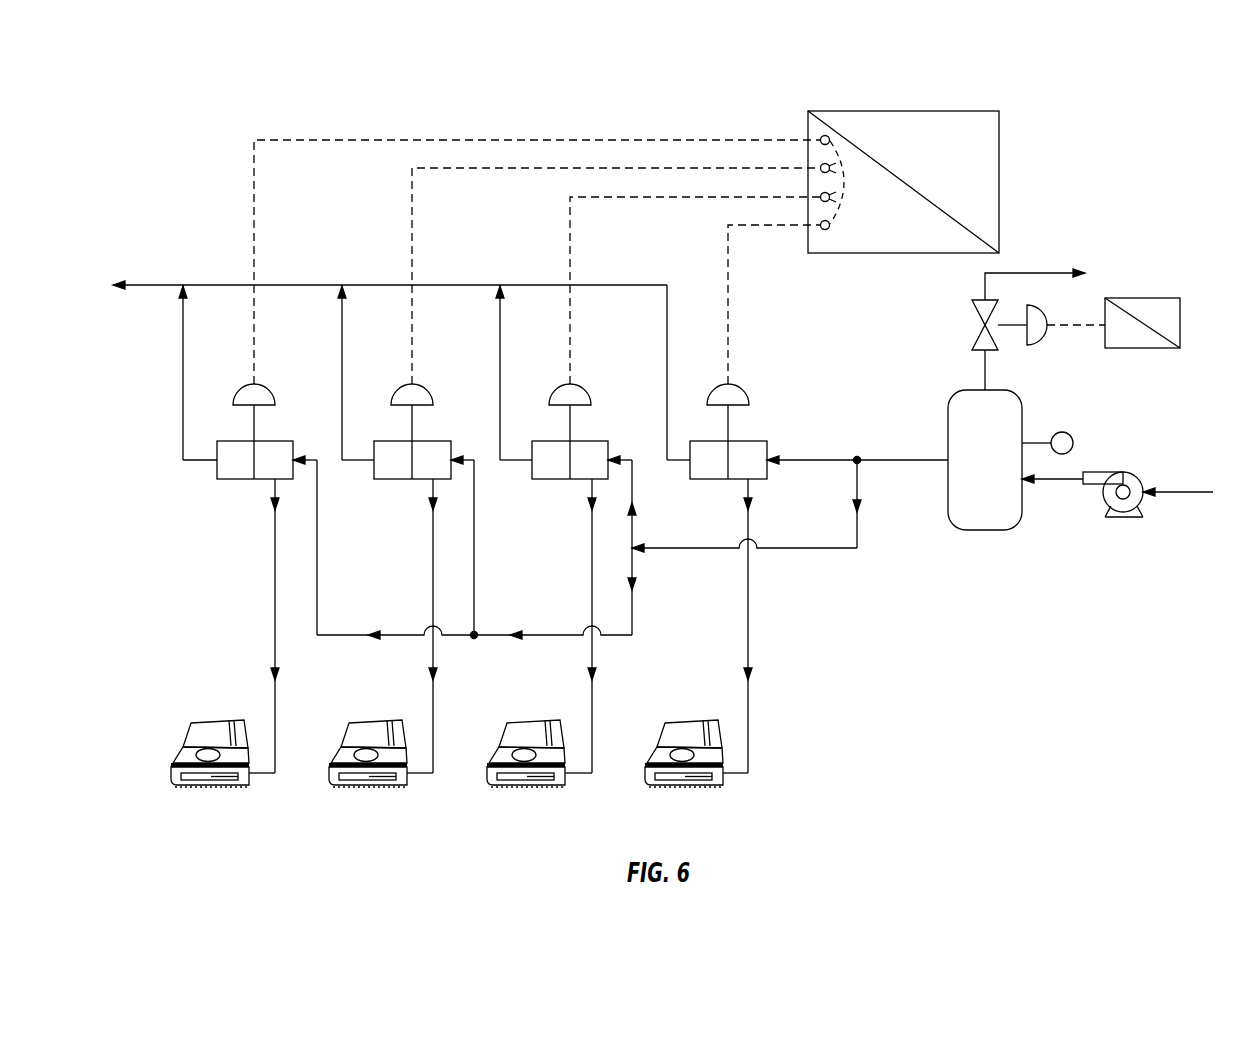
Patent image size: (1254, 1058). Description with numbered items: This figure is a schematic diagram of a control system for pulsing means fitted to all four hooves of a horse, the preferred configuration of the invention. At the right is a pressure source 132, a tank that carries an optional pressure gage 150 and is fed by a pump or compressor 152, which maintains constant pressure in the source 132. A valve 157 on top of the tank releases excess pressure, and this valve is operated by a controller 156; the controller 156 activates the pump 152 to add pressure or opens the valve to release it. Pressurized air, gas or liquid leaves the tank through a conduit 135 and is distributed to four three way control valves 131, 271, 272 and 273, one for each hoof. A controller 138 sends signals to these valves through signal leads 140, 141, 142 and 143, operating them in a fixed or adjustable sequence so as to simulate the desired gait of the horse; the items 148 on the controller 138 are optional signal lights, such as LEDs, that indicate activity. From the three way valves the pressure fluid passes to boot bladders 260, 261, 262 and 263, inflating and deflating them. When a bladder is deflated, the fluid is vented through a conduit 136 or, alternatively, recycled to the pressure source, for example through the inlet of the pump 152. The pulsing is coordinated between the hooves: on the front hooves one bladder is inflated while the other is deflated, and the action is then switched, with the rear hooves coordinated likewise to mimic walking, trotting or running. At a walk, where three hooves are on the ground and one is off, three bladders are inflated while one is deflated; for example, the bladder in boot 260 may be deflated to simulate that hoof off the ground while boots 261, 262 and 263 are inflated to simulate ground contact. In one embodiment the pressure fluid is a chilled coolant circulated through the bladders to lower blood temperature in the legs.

The three way control valve 131 is at (753, 441).
The pressure source 132 is at (1025, 413).
The conduit 135 is at (888, 460).
The conduit 136 is at (157, 283).
The controller 138 is at (980, 111).
The signal lead 140 is at (254, 183).
The signal lead 141 is at (412, 205).
The signal lead 142 is at (578, 230).
The signal lead 143 is at (738, 270).
The signal lights 148 is at (835, 130).
The pressure gage 150 is at (1065, 432).
The pump or compressor 152 is at (1125, 472).
The controller 156 is at (1160, 298).
The valve 157 is at (983, 310).
The boot bladder 260 is at (703, 790).
The boot bladder 261 is at (543, 790).
The boot bladder 262 is at (348, 790).
The boot bladder 263 is at (190, 790).
The three way control valve 271 is at (595, 441).
The three way control valve 272 is at (437, 441).
The three way control valve 273 is at (278, 441).